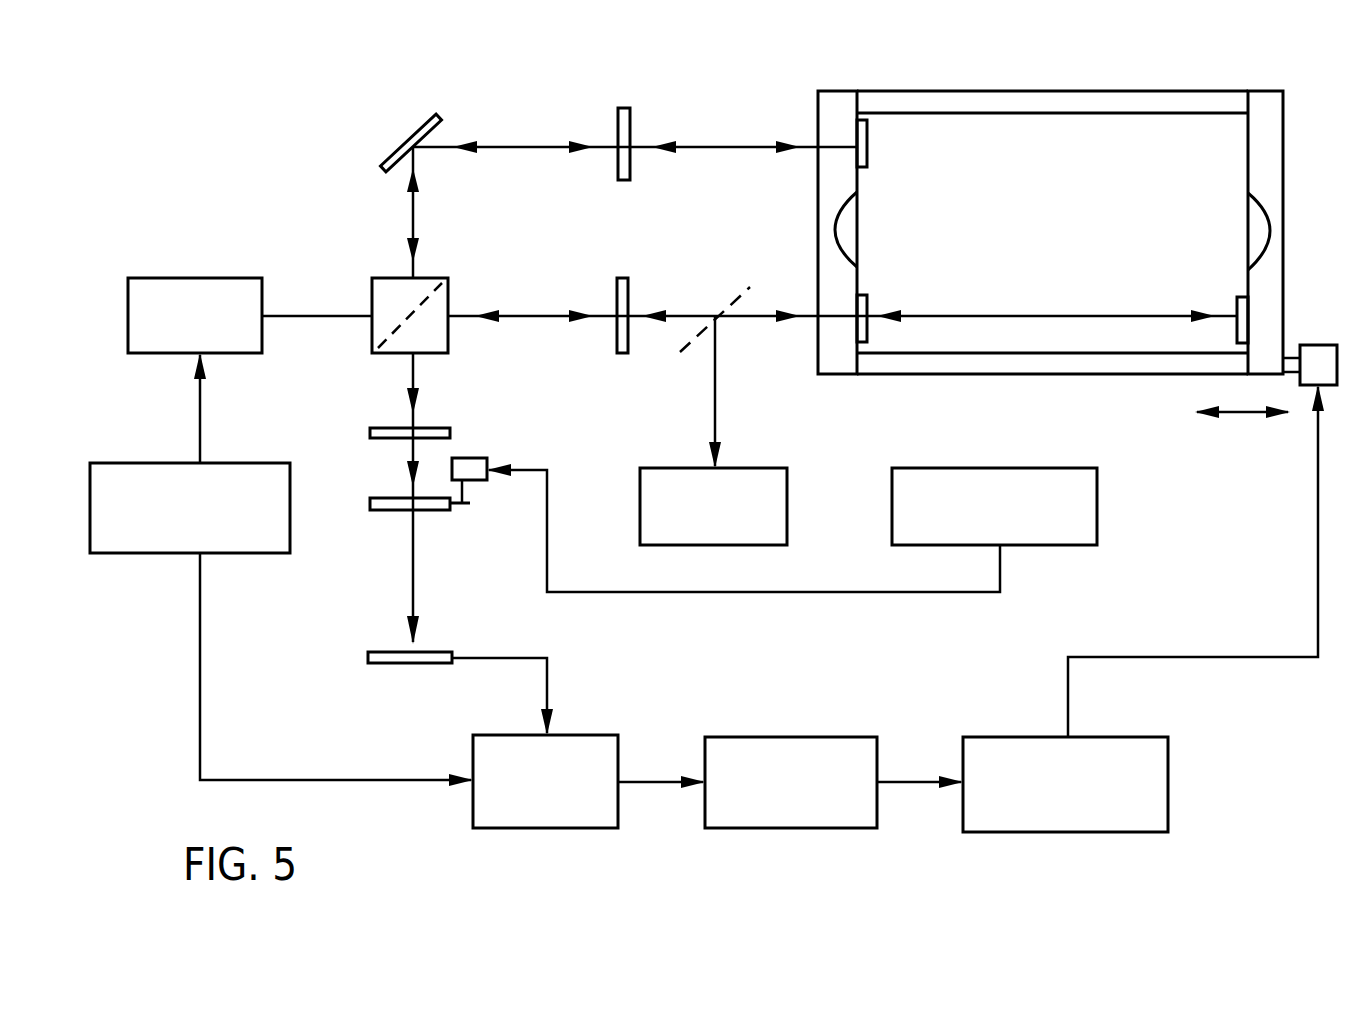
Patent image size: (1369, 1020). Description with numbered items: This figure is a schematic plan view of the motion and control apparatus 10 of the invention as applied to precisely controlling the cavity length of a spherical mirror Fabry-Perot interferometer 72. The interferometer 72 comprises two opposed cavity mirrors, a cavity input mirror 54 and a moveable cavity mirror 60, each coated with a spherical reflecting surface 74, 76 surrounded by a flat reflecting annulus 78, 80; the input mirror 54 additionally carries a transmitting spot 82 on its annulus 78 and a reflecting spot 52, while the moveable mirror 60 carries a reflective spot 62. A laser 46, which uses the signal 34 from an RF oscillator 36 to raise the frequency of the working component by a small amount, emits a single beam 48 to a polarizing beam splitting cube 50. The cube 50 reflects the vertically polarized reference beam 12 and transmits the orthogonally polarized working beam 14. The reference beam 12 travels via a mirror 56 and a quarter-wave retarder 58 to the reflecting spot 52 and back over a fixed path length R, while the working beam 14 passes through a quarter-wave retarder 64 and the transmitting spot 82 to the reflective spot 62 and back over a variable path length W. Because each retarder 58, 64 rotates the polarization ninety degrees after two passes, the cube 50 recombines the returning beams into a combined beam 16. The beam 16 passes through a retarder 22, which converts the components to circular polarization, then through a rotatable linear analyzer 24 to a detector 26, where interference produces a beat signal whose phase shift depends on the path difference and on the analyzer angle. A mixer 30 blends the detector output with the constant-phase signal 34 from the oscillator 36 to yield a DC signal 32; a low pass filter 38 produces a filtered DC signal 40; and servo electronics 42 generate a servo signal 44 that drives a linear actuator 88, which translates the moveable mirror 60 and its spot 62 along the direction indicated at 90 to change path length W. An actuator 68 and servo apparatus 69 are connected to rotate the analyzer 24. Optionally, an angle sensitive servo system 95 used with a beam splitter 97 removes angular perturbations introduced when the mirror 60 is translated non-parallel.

The motion and control apparatus 10 is at (308, 143).
The reference beam 12 is at (416, 223).
The working beam 14 is at (526, 318).
The optical beam 16 is at (418, 374).
The retarder 22 is at (370, 432).
The rotatable linear analyzer 24 is at (368, 510).
The detector 26 is at (368, 655).
The mixer 30 is at (555, 828).
The DC signal 32 is at (640, 780).
The signal 34 is at (200, 420).
The RF oscillator 36 is at (150, 553).
The low pass filter 38 is at (795, 828).
The filtered DC signal 40 is at (900, 780).
The servo electronics 42 is at (1050, 832).
The servo signal 44 is at (1068, 680).
The laser 46 is at (190, 278).
The single beam 48 is at (328, 315).
The polarizing beam splitting cube 50 is at (378, 350).
The reflecting spot 52 is at (868, 146).
The cavity input mirror 54 is at (852, 91).
The mirror 56 is at (412, 130).
The ¼-wave retarder 58 is at (618, 110).
The moveable cavity mirror 60 is at (1262, 91).
The reflective spot 62 is at (1237, 310).
The ¼-wave retarder 64 is at (620, 278).
The actuator 68 is at (478, 458).
The servo apparatus 69 is at (995, 468).
The Fabry-Perot interferometer 72 is at (1075, 91).
The spherical reflecting surface 74 is at (848, 211).
The spherical reflecting surface 76 is at (1258, 207).
The flat reflecting annulus 78 is at (858, 278).
The flat reflecting annulus 80 is at (1248, 134).
The transmitting spot 82 is at (868, 329).
The linear actuator 88 is at (1318, 345).
The direction of motion 90 is at (1250, 413).
The angle sensitive servo system 95 is at (742, 467).
The beam splitter 97 is at (744, 288).
The fixed path length R is at (737, 149).
The variable path length W is at (510, 316).